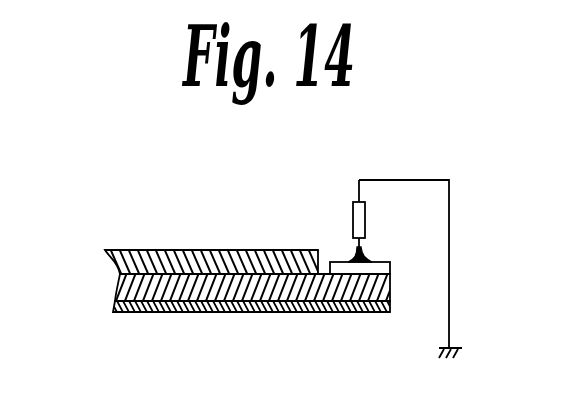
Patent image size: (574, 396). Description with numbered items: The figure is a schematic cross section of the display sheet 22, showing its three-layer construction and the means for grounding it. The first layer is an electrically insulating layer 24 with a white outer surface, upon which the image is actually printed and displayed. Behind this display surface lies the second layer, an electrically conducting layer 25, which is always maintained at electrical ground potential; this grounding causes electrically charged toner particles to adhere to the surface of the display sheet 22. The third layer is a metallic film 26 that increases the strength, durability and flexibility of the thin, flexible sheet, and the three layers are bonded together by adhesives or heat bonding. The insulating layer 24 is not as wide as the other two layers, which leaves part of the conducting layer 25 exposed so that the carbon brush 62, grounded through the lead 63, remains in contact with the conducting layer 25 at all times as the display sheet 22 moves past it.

The display sheet 22 is at (104, 227).
The electrically insulating layer 24 is at (152, 250).
The electrically conducting layer 25 is at (117, 285).
The metallic film 26 is at (225, 313).
The carbon brush 62 is at (356, 225).
The lead 63 is at (450, 262).